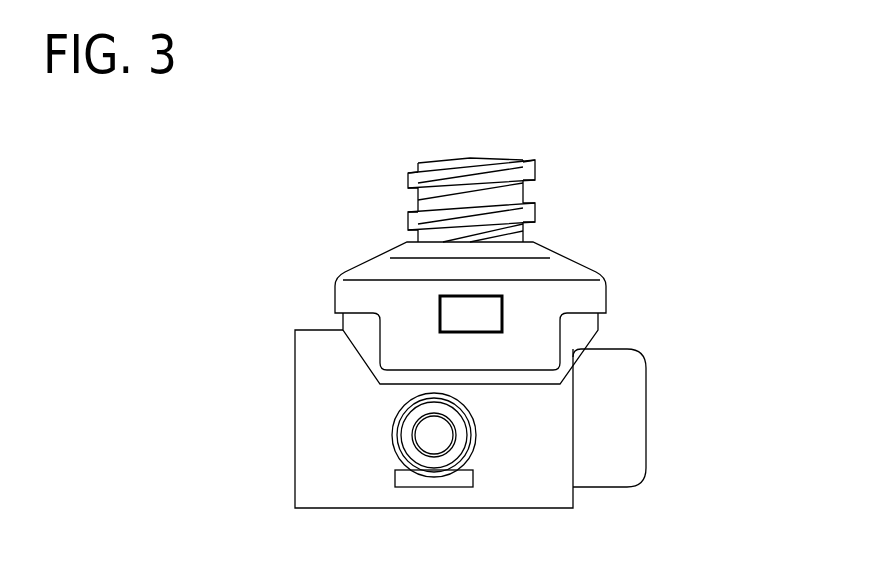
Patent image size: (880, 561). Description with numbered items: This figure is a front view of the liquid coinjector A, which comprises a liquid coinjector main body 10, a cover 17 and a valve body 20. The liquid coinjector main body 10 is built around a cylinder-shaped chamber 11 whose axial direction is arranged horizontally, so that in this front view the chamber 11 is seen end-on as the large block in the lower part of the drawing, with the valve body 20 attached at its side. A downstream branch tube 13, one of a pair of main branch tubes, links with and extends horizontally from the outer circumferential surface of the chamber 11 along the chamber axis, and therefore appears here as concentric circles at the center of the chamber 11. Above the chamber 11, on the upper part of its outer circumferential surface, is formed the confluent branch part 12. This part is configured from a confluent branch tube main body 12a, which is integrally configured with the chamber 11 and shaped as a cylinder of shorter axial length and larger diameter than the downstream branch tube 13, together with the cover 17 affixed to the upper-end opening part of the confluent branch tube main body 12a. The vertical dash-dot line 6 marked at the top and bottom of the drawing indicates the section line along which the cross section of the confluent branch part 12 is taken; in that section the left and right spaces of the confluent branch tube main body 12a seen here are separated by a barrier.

The section line 6- 6 is at (472, 388).
The liquid coinjector main body 10 is at (293, 279).
The chamber 11 is at (303, 390).
The confluent branch part 12 is at (548, 230).
The confluent branch tube main body 12a is at (518, 378).
The downstream branch tube 13 is at (392, 440).
The cover 17 is at (372, 272).
The valve body 20 is at (659, 359).
The liquid coinjector A is at (604, 177).